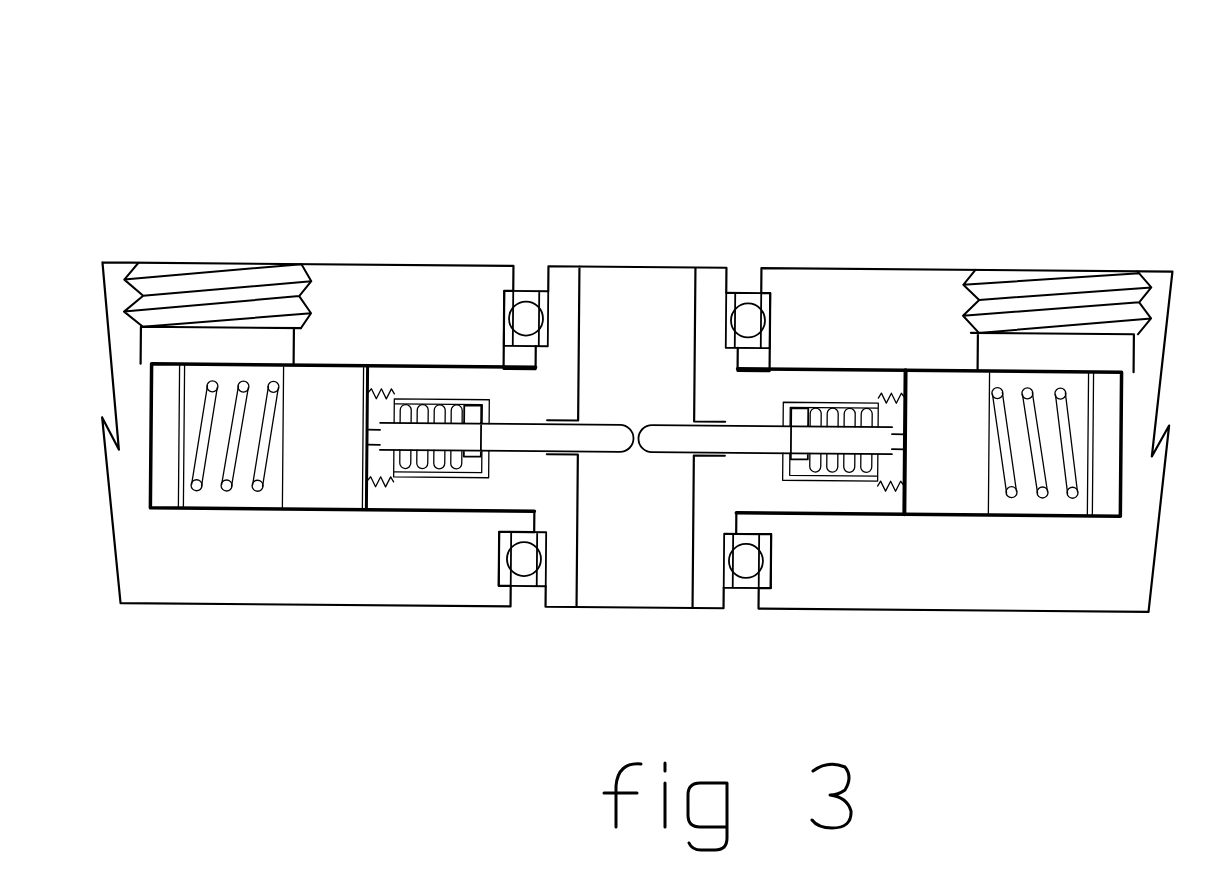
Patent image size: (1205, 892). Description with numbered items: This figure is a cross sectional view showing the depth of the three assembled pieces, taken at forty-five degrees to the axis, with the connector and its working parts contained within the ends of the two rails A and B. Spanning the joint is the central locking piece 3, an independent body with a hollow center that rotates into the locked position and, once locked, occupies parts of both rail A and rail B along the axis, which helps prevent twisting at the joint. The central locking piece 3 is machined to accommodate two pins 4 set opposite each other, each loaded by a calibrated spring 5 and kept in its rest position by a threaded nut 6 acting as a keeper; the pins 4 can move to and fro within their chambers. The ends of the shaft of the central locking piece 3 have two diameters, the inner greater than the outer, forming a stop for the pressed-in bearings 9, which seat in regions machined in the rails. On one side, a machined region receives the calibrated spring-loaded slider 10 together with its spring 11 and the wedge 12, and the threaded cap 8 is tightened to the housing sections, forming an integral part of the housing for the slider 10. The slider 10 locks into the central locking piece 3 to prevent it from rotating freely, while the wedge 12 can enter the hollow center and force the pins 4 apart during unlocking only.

The central locking piece 3 is at (617, 321).
The pin 4 is at (793, 438).
The spring 5 is at (838, 407).
The threaded nut 6 is at (392, 404).
The threaded cap 8 is at (238, 281).
The bearing 9 is at (528, 566).
The slider 10 is at (957, 425).
The spring 11 is at (1034, 388).
The wedge 12 is at (1107, 477).
The rail A is at (306, 571).
The rail B is at (903, 321).